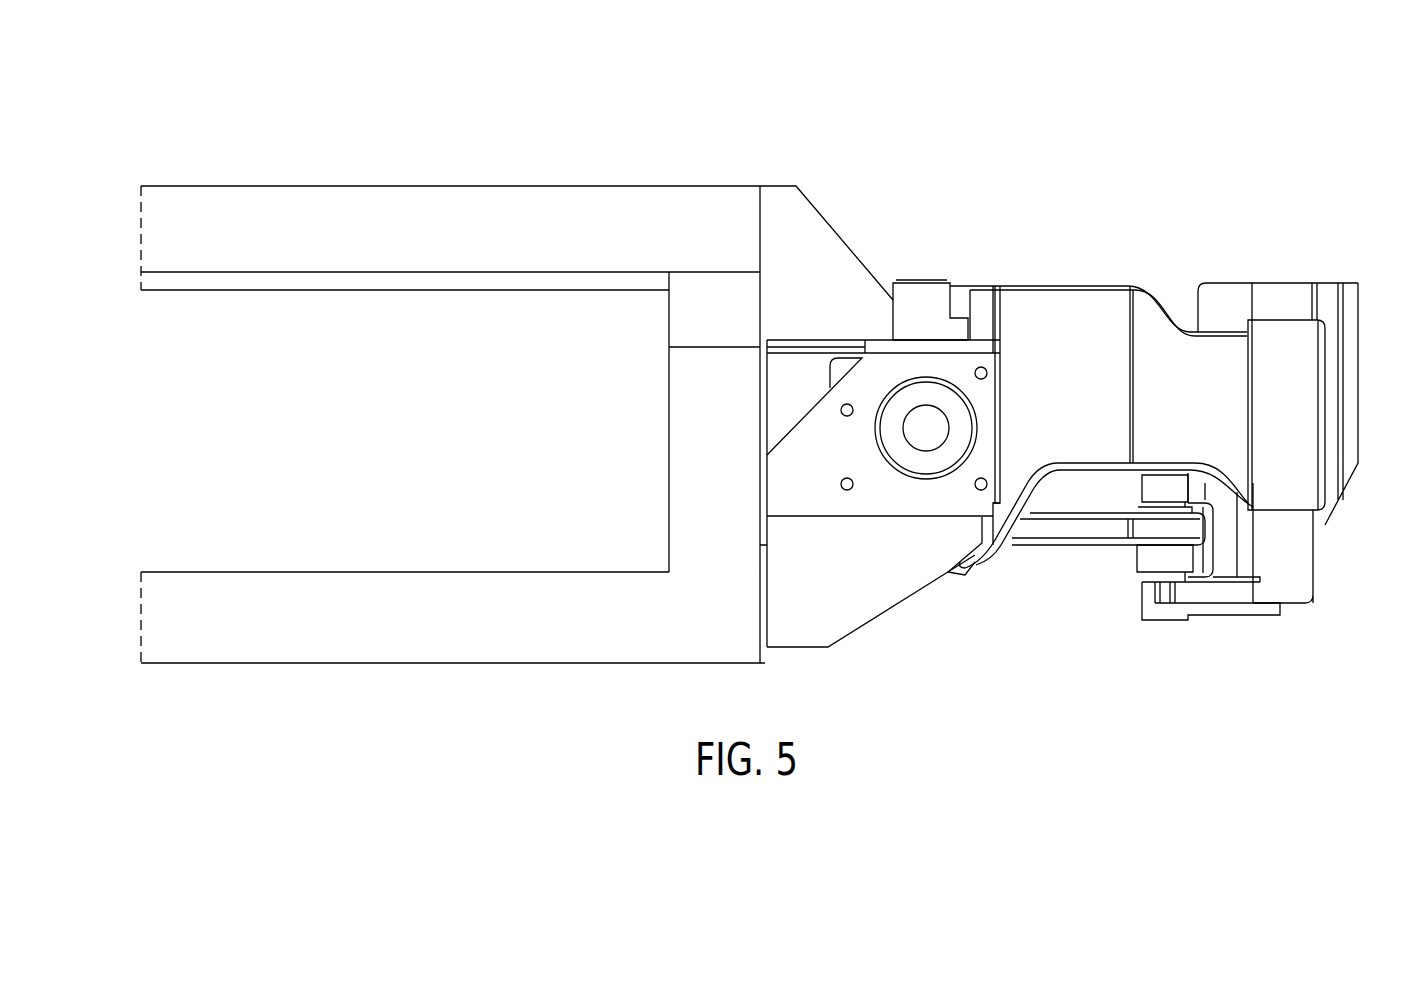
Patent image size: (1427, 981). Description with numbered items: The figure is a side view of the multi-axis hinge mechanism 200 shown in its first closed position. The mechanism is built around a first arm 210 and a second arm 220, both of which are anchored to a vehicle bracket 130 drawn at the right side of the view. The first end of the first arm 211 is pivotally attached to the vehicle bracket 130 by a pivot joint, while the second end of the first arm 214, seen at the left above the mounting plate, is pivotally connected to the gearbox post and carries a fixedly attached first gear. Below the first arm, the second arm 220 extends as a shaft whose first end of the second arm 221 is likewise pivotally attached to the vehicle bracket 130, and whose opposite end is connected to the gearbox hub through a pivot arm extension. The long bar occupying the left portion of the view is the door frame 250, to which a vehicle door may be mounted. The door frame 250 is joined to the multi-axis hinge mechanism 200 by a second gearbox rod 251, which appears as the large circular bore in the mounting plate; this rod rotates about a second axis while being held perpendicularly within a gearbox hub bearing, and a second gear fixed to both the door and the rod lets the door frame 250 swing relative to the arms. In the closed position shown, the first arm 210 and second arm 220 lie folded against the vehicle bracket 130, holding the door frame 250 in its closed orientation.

The multi-axis hinge mechanism 200 is at (160, 138).
The door frame 250 is at (442, 222).
The second end of the first arm 214 is at (915, 282).
The second gearbox rod 251 is at (930, 417).
The first arm 210 is at (1105, 310).
The first end of the first arm 211 is at (1275, 330).
The vehicle bracket 130 is at (1352, 357).
The second arm 220 is at (1108, 530).
The first end of the second arm 221 is at (1145, 562).